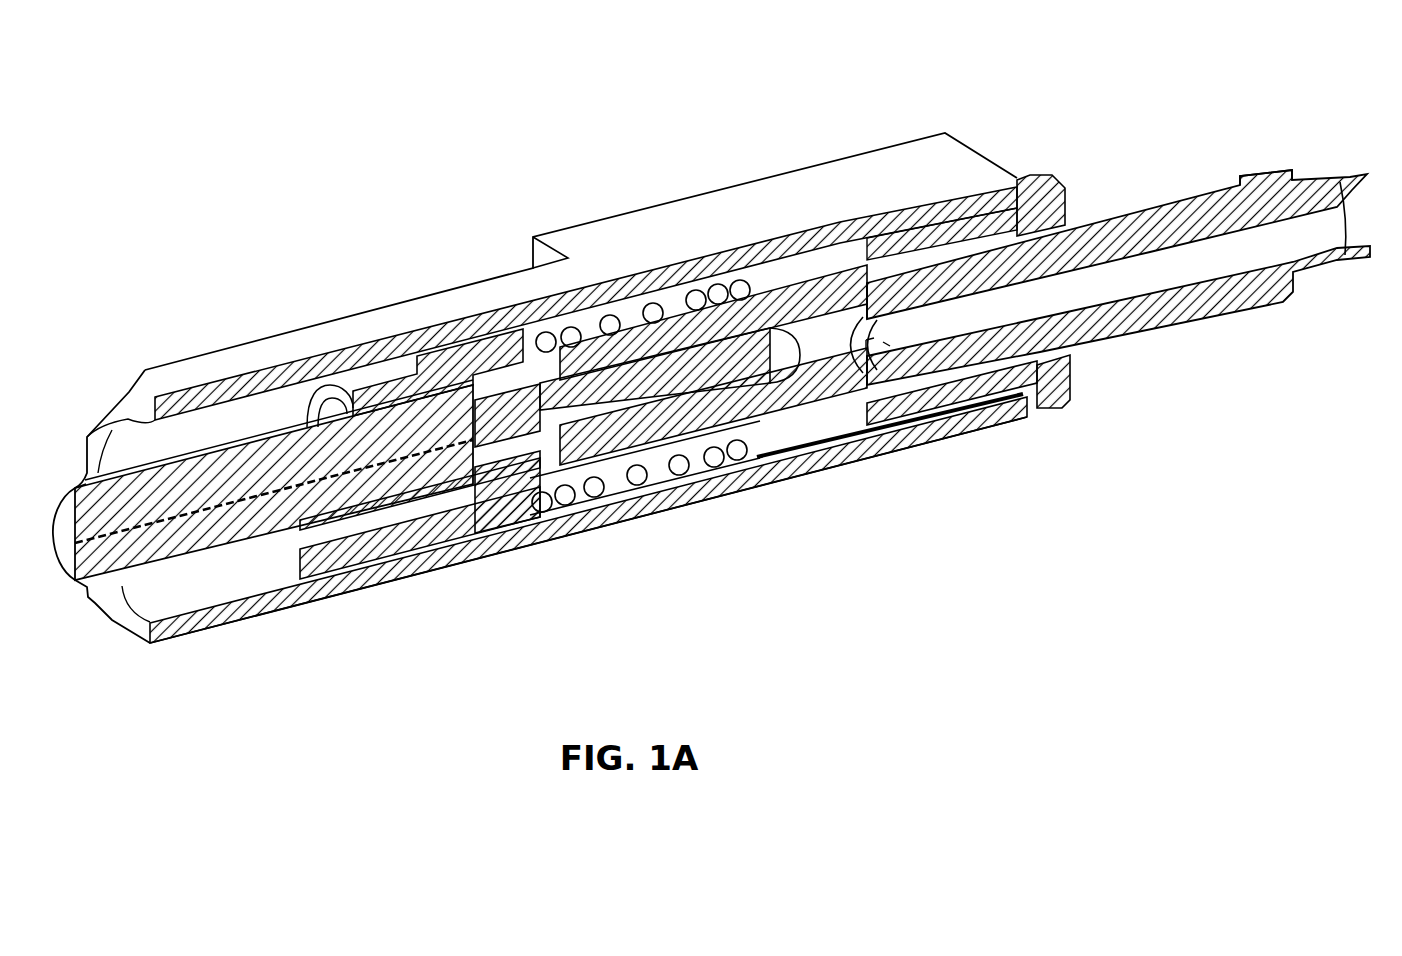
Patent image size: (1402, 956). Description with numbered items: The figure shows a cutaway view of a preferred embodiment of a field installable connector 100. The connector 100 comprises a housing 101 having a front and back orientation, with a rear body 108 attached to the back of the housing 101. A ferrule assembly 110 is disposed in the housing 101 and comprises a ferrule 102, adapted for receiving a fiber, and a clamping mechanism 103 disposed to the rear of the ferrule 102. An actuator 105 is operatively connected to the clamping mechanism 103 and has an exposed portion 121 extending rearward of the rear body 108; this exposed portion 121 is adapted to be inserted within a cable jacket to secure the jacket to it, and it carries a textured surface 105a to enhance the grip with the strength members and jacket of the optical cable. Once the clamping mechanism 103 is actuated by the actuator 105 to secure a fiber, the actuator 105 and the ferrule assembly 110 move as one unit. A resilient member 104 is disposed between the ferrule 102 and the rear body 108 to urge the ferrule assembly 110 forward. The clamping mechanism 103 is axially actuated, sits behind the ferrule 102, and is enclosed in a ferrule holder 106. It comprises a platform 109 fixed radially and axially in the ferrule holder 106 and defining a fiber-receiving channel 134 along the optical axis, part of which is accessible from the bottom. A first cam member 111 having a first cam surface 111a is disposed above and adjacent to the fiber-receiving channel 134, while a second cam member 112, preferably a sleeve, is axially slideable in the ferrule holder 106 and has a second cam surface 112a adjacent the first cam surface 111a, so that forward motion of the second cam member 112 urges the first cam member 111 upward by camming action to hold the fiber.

The field installable connector 100 is at (160, 190).
The housing 101 is at (797, 174).
The ferrule 102 is at (260, 527).
The clamping mechanism 103 is at (993, 427).
The resilient member 104 is at (670, 515).
The actuator 105 is at (1172, 223).
The textured surface 105a is at (1237, 180).
The ferrule holder 106 is at (516, 548).
The rear body 108 is at (1040, 177).
The platform 109 is at (487, 385).
The ferrule assembly 110 is at (955, 452).
The first cam member 111 is at (868, 386).
The first cam surface 111a is at (613, 477).
The second cam member 112 is at (690, 277).
The second cam surface 112a is at (787, 390).
The exposed portion 121 is at (1345, 294).
The fiber-receiving channel 134 is at (550, 343).